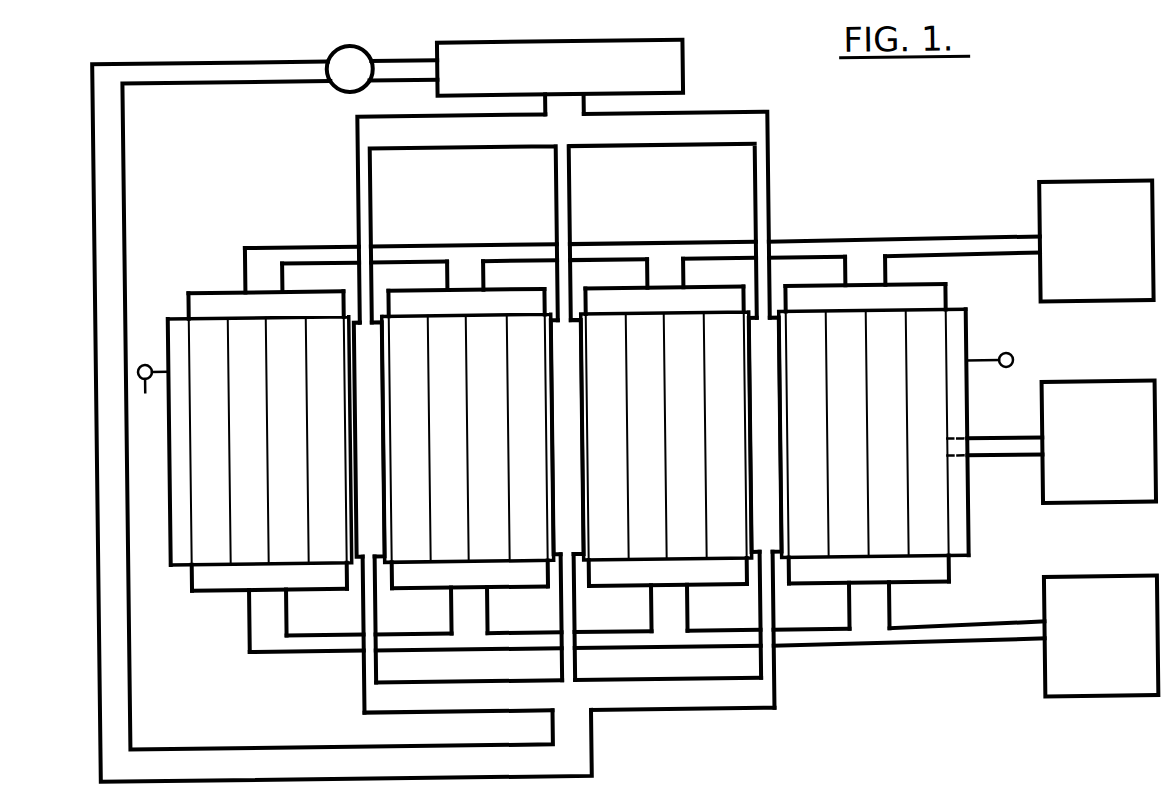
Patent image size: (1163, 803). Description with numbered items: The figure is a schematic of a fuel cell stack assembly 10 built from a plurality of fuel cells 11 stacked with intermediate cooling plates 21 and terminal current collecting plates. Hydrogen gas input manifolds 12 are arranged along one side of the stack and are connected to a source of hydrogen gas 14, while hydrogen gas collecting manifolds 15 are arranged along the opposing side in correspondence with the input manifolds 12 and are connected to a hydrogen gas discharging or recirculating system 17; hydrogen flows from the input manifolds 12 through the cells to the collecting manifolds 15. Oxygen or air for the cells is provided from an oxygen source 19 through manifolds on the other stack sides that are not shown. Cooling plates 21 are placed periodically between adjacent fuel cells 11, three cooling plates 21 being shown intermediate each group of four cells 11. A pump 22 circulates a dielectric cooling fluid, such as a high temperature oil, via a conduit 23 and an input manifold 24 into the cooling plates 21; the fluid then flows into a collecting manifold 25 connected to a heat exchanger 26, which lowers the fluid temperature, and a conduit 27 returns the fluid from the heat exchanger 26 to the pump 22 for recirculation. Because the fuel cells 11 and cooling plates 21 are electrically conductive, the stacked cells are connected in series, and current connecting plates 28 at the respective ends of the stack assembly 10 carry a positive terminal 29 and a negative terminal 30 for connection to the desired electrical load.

The fuel cell stack assembly 10 is at (800, 173).
The fuel cell 11 is at (236, 328).
The hydrogen gas input manifold 12 is at (302, 287).
The source of hydrogen gas 14 is at (1082, 238).
The hydrogen gas collecting manifold 15 is at (216, 588).
The hydrogen gas discharging or recirculating system 17 is at (1085, 652).
The oxygen source 19 is at (1083, 447).
The cooling plate 21 is at (376, 314).
The pump 22 is at (342, 47).
The conduit 23 is at (89, 466).
The input manifold 24 is at (762, 695).
The collecting manifold 25 is at (707, 110).
The heat exchanger 26 is at (676, 64).
The conduit 27 is at (399, 56).
The current connecting plate 28 is at (179, 327).
The positive terminal 29 is at (148, 394).
The negative terminal 30 is at (1013, 360).